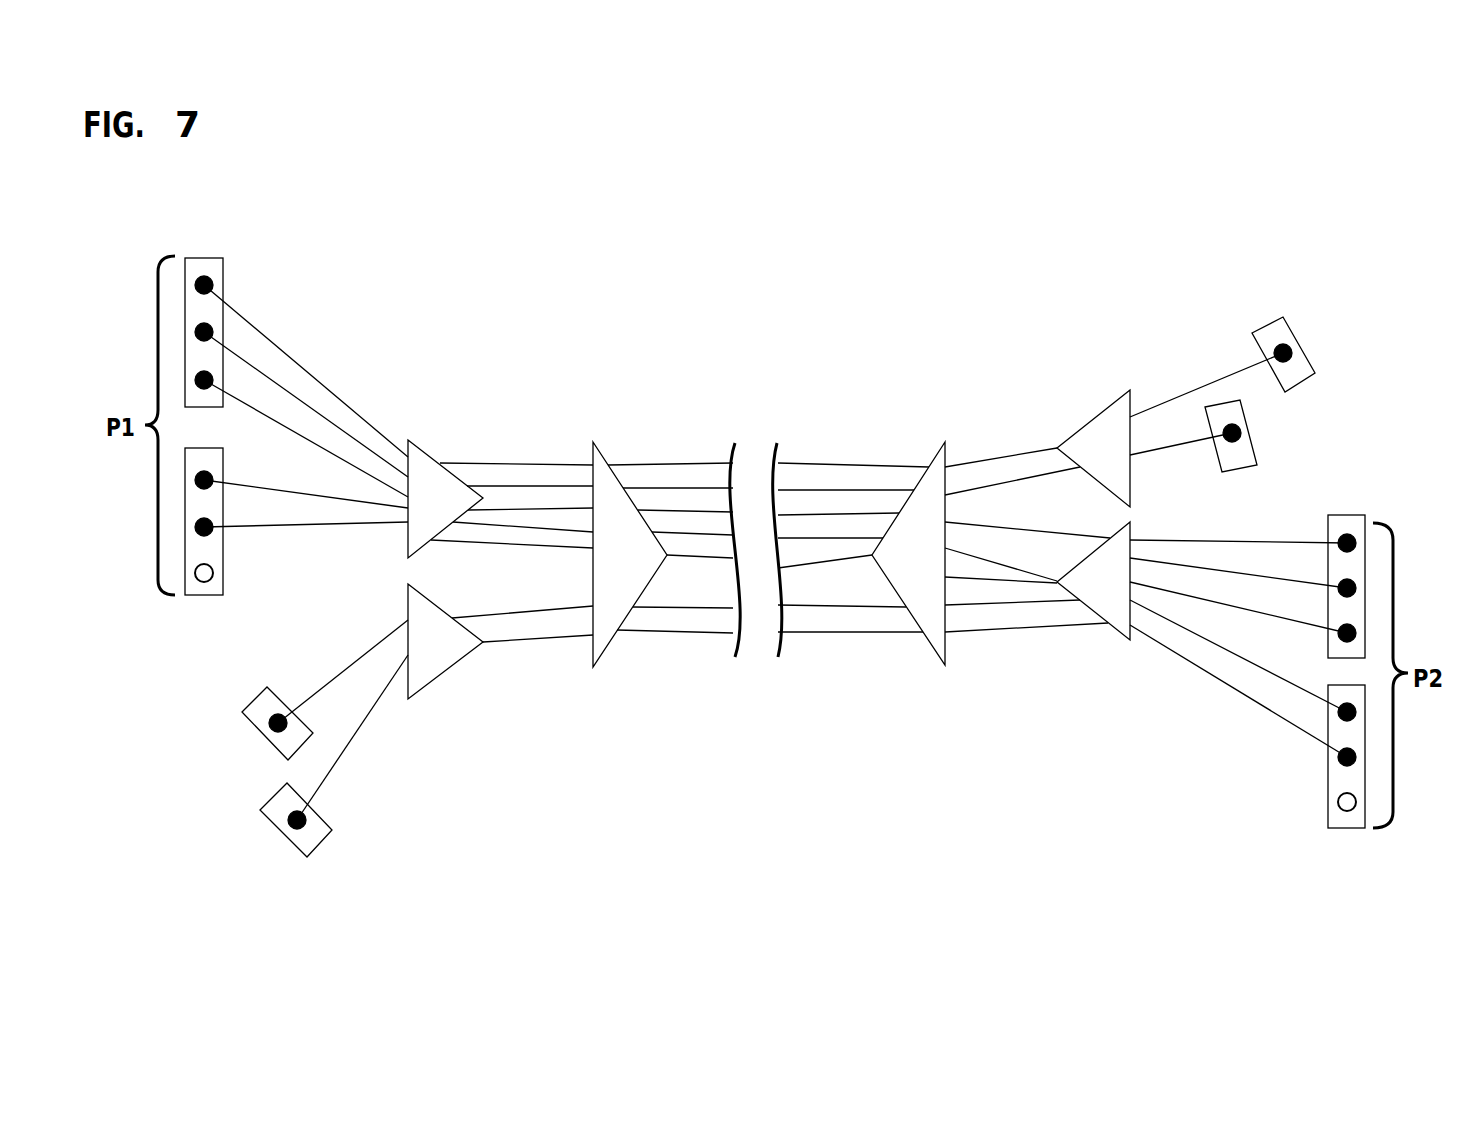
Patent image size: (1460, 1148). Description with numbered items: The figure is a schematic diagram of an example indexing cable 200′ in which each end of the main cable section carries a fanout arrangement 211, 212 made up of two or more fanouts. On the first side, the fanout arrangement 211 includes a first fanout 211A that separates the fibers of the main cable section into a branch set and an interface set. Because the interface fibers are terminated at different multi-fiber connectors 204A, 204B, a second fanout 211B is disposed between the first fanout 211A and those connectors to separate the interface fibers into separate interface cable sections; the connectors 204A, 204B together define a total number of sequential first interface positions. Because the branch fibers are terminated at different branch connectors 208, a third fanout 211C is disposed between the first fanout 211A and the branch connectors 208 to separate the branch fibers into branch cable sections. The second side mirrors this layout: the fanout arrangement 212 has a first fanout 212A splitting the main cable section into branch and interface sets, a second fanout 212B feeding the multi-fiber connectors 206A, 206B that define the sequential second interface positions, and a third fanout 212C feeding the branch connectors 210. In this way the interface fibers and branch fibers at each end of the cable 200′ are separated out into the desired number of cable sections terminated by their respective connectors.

The cable 200′ is at (852, 674).
The multi-fiber connector 204A is at (205, 258).
The multi-fiber connector 204B is at (203, 598).
The multi-fiber connector 206A is at (1353, 515).
The multi-fiber connector 206B is at (1347, 830).
The branch connector 208 is at (247, 723).
The branch connector 210 is at (1288, 322).
The fanout arrangement 211 is at (663, 418).
The first fanout 211A is at (650, 567).
The second fanout 211B is at (460, 510).
The third fanout 211C is at (460, 653).
The fanout arrangement 212 is at (1143, 376).
The first fanout 212A is at (935, 567).
The second fanout 212B is at (1125, 596).
The third fanout 212C is at (1125, 462).